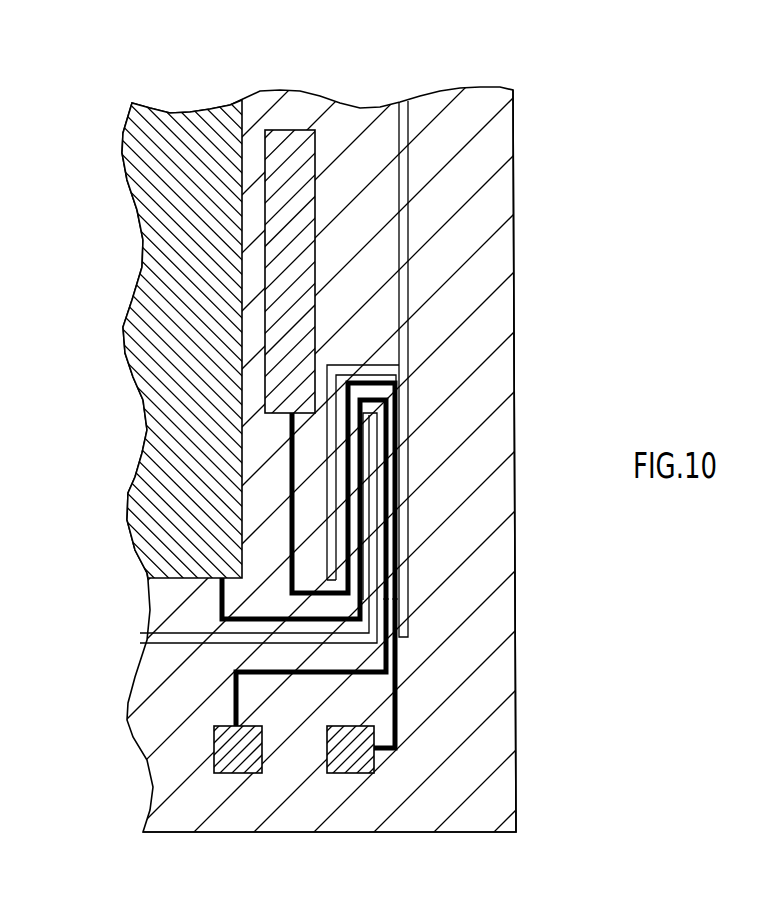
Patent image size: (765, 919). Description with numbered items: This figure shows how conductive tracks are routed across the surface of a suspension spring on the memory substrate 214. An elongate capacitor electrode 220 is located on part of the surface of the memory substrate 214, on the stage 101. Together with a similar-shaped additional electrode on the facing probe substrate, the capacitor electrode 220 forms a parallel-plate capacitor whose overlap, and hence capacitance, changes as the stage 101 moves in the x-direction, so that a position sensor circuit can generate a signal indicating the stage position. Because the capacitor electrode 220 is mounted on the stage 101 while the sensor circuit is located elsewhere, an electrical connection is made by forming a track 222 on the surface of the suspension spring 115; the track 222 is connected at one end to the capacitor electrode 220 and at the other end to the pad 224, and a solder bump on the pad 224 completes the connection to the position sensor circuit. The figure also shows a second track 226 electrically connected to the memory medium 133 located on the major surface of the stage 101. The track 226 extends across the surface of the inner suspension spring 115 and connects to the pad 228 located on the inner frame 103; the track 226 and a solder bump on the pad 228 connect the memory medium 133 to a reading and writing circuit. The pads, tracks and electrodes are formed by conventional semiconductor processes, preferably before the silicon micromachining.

The stage 101 is at (330, 103).
The inner frame 103 is at (432, 150).
The suspension spring 115 is at (373, 393).
The memory medium 133 is at (186, 242).
The memory substrate 214 is at (515, 253).
The capacitor electrode 220 is at (290, 152).
The track 222 is at (398, 692).
The pad 224 is at (350, 752).
The track 226 is at (232, 694).
The pad 228 is at (238, 752).